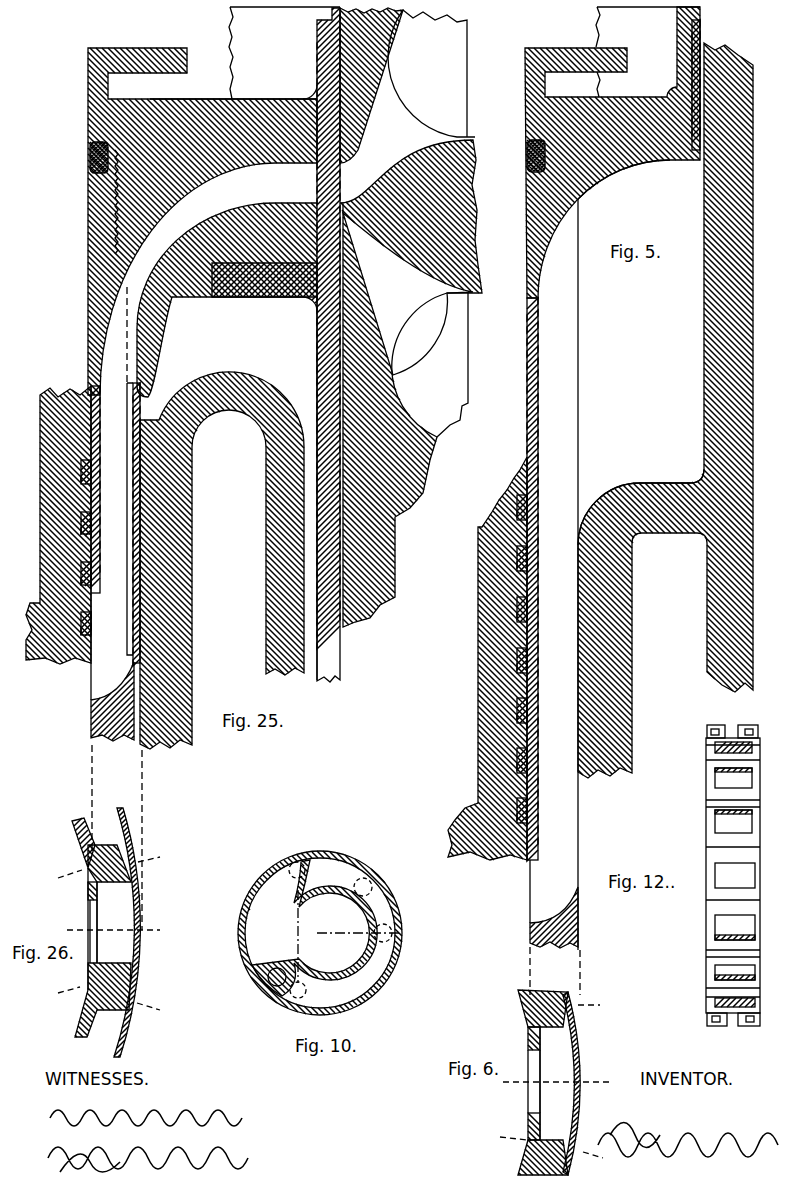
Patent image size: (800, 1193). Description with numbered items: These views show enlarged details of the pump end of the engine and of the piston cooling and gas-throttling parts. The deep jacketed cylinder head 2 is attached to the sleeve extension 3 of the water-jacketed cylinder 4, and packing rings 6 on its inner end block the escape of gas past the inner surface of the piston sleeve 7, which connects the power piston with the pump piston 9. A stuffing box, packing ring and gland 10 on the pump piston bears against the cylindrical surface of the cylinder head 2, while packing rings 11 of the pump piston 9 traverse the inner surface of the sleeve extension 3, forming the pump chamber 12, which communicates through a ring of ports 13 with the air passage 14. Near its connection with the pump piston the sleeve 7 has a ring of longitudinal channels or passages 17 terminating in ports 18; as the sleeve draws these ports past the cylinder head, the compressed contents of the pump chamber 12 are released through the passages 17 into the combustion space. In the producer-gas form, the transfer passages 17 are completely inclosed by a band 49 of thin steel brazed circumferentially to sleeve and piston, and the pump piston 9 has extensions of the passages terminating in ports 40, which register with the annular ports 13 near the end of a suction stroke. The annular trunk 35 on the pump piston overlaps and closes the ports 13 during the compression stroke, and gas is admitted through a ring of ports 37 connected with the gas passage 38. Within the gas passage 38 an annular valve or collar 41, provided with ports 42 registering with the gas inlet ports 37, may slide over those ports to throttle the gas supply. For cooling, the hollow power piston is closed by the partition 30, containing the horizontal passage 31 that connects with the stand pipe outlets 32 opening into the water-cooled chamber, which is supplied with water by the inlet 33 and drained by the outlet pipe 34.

In FIG. 25, the cylinder head 2 is at (40, 537).
In FIG. 5, the cylinder head 2 is at (478, 710).
In FIG. 25, the sleeve extension 3 is at (398, 557).
In FIG. 5, the sleeve extension 3 is at (704, 400).
In FIG. 25, the cylinder 4 is at (195, 560).
In FIG. 5, the cylinder 4 is at (632, 650).
In FIG. 25, the packing rings 6 is at (81, 473).
In FIG. 5, the packing rings 6 is at (517, 610).
In FIG. 25, the piston sleeve 7 is at (88, 295).
In FIG. 5, the piston sleeve 7 is at (527, 330).
In FIG. 6, the piston sleeve 7 is at (517, 1031).
In FIG. 26, the piston sleeve 7 is at (88, 860).
In FIG. 25, the pump piston 9 is at (183, 99).
In FIG. 5, the pump piston 9 is at (622, 160).
In FIG. 25, the stuffing box, packing ring and gland 10 is at (88, 108).
In FIG. 5, the stuffing box, packing ring and gland 10 is at (527, 108).
In FIG. 25, the packing rings 11 is at (332, 50).
In FIG. 5, the packing rings 11 is at (692, 48).
In FIG. 5, the pump chamber 12 is at (633, 330).
In FIG. 25, the ports 13 is at (371, 101).
In FIG. 25, the air passage 14 is at (431, 73).
In FIG. 25, the passages 17 is at (208, 342).
In FIG. 5, the passages 17 is at (561, 574).
In FIG. 6, the passages 17 is at (558, 1083).
In FIG. 26, the passages 17 is at (109, 922).
In FIG. 25, the ports 18 is at (106, 646).
In FIG. 5, the ports 18 is at (544, 891).
In FIG. 6, the ports 18 is at (528, 1097).
In FIG. 26, the ports 18 is at (90, 915).
In FIG. 10, the partition 30 is at (403, 933).
In FIG. 10, the horizontal passage 31 is at (363, 981).
In FIG. 10, the stand pipe outlets 32 is at (298, 934).
In FIG. 10, the inlet 33 is at (270, 990).
In FIG. 10, the outlet pipe 34 is at (371, 884).
In FIG. 25, the annular trunk 35 is at (317, 338).
In FIG. 25, the ports 37 is at (408, 294).
In FIG. 25, the gas passage 38 is at (452, 365).
In FIG. 25, the ports 40 is at (272, 242).
In FIG. 12, the collar 41 is at (706, 843).
In FIG. 12, the ports 42 is at (728, 930).
In FIG. 25, the band 49 is at (131, 552).
In FIG. 26, the band 49 is at (143, 952).